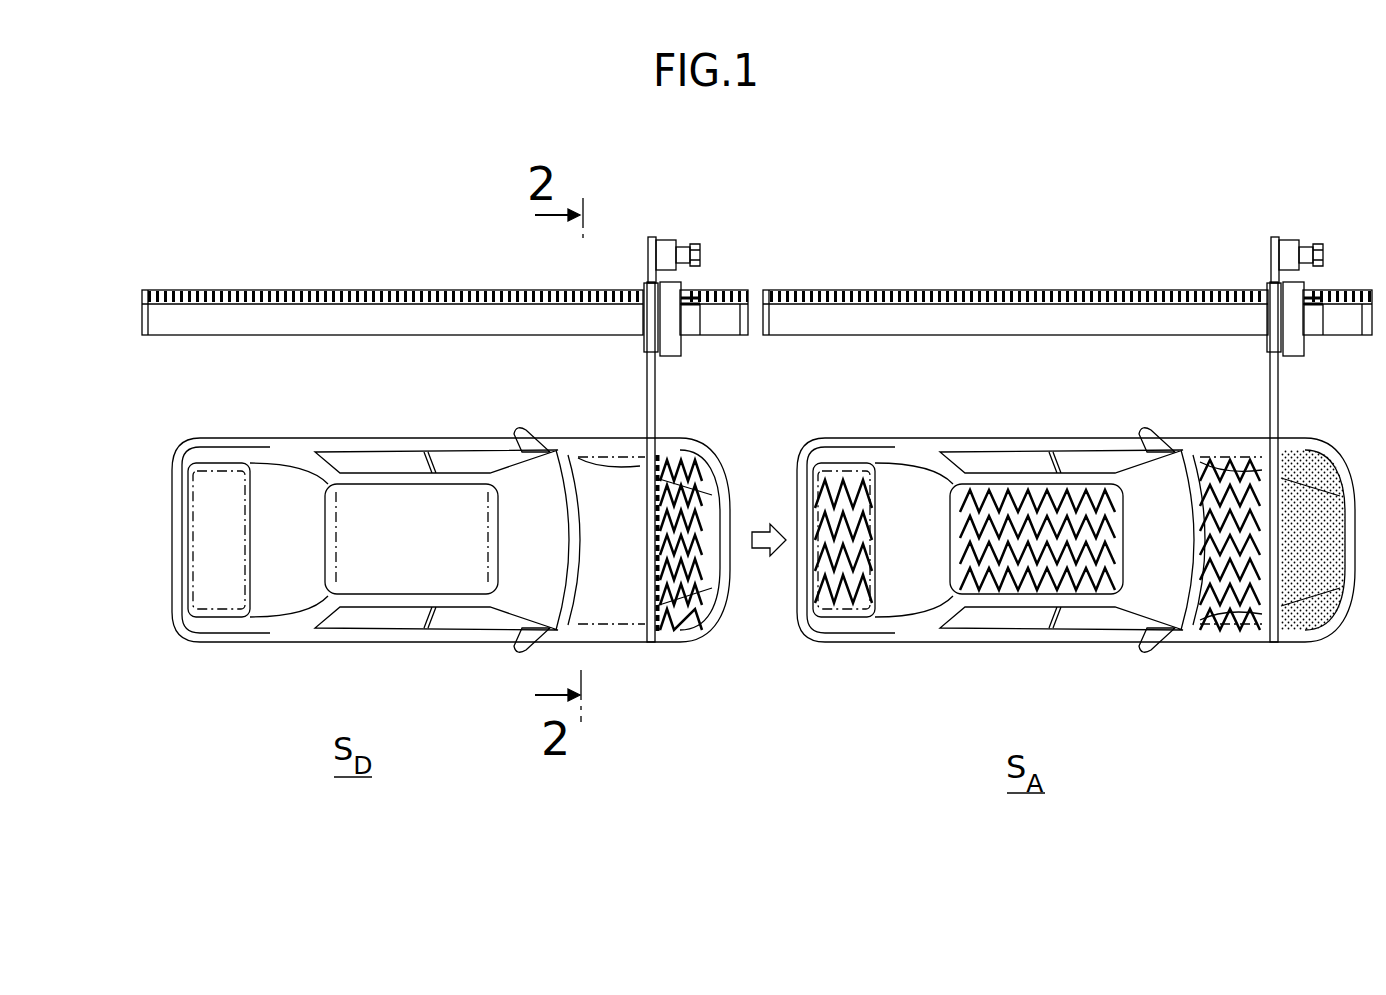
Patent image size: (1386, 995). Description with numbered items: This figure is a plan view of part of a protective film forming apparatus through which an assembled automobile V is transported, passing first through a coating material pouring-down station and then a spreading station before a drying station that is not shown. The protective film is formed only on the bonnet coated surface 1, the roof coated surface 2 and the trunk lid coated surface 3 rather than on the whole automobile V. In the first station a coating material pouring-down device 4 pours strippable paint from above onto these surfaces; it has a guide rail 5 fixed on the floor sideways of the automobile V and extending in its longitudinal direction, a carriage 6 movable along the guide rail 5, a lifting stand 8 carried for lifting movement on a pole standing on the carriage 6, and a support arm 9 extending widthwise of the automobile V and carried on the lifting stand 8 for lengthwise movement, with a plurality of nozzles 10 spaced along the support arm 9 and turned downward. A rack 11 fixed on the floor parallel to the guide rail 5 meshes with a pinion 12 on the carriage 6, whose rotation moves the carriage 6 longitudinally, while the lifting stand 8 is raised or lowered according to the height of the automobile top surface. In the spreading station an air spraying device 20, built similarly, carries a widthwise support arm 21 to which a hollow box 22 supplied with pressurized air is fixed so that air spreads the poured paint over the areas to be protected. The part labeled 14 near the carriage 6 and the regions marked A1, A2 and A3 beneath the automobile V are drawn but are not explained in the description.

The bonnet coated surface 1 is at (600, 478).
The roof coated surface 2 is at (480, 540).
The trunk lid coated surface 3 is at (232, 488).
The coating material pouring-down device 4 is at (687, 234).
The guide rail 5 is at (392, 313).
The carriage 6 is at (700, 332).
The lifting stand 8 is at (672, 360).
The support arm 9 is at (660, 540).
The nozzles 10 is at (664, 602).
The rack 11 is at (388, 292).
The pinion 12 is at (700, 296).
The mounting plate 14 is at (640, 320).
The air spraying device 20 is at (1300, 232).
The support arm 21 is at (1278, 392).
The hollow box 22 is at (1290, 610).
The automobile V is at (451, 507).
The front area A1 is at (602, 638).
The roof area A2 is at (392, 598).
The rear area A3 is at (230, 612).